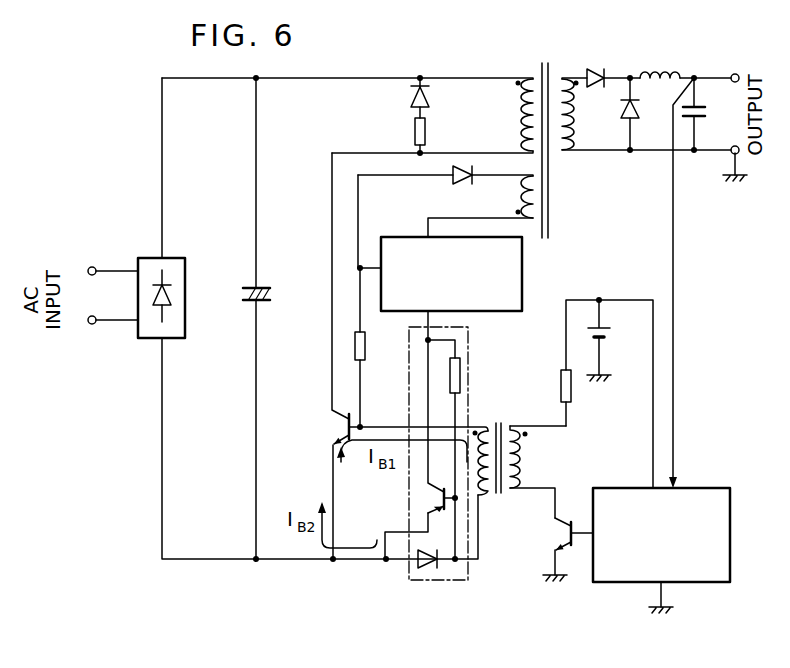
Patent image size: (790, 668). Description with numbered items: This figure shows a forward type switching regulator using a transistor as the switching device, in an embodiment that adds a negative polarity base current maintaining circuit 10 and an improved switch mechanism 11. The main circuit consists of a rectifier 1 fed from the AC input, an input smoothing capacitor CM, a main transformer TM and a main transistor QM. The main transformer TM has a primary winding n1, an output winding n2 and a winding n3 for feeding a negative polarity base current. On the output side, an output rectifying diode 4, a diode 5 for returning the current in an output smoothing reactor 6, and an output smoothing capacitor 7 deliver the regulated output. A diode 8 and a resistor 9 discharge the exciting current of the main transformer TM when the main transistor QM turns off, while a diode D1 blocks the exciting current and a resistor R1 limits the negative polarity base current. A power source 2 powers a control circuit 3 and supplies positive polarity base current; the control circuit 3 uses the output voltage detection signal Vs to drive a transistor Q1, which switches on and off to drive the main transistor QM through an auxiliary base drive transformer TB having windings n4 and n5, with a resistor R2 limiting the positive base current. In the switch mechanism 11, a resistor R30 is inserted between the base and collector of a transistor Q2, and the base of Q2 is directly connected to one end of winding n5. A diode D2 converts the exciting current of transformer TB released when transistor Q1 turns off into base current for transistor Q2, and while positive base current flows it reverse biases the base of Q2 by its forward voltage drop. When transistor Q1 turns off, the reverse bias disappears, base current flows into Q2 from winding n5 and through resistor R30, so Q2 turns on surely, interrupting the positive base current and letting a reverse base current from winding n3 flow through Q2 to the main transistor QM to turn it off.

The rectifier 1 is at (148, 258).
The power source 2 is at (612, 332).
The control circuit 3 is at (731, 543).
The output rectifying diode 4 is at (599, 72).
The diode for returning the current in an output smoothing reactor 5 is at (640, 111).
The choke coil 6 is at (669, 71).
The output smoothing capacitor 7 is at (706, 112).
The diode 8 is at (409, 100).
The resistor 9 is at (409, 130).
The negative polarity base current maintaining circuit 10 is at (522, 268).
The switch mechanism 11 is at (494, 580).
The main transformer TM is at (543, 60).
The primary winding n1 is at (517, 109).
The output winding n2 is at (568, 112).
The winding for feeding a negative polarity base current n3 is at (519, 196).
The winding n4 is at (528, 461).
The winding n5 is at (492, 479).
The diode D1 is at (451, 183).
The diode D2 is at (412, 568).
The input smoothing capacitor CM is at (270, 292).
The resistor R1 is at (366, 356).
The resistor R2 is at (560, 384).
The resistor R30 is at (464, 372).
The main transistor QM is at (342, 424).
The transistor Q1 is at (554, 538).
The transistor Q2 is at (436, 498).
The auxiliary transformer TB is at (497, 428).
The output voltage detection signal Vs is at (684, 470).